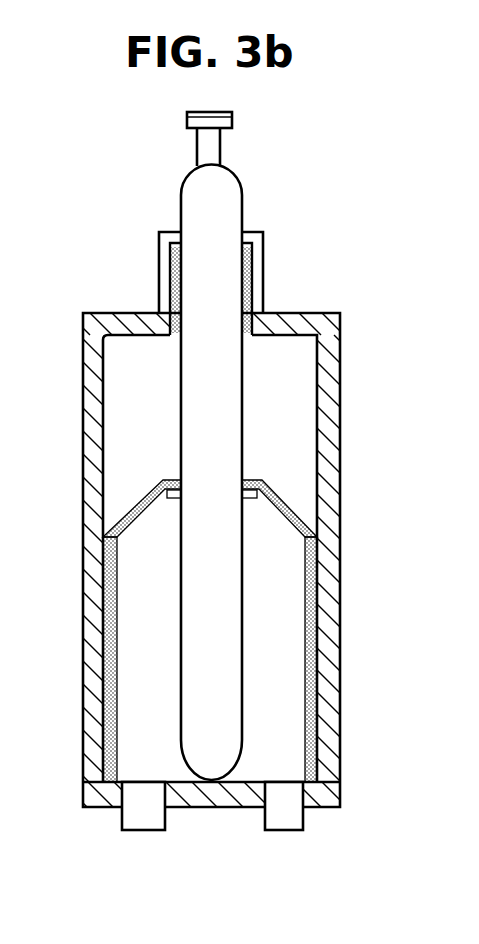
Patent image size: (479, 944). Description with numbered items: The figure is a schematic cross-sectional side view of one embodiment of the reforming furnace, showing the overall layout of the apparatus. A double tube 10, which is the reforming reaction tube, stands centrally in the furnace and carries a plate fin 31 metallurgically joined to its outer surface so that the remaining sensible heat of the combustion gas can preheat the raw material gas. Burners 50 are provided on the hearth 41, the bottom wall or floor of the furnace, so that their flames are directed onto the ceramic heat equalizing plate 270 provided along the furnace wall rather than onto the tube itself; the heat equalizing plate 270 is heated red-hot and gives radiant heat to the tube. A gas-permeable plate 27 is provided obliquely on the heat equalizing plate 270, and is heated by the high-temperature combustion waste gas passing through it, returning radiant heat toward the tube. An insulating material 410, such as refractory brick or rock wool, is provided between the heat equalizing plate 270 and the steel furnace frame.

The double tube 10 is at (241, 172).
The plate fin 31 is at (247, 273).
The gas-permeable plate 27 is at (270, 493).
The ceramic heat equalizing plate 270 is at (117, 622).
The insulating material 410 is at (340, 620).
The hearth 41 is at (318, 790).
The burner 50 is at (142, 822).